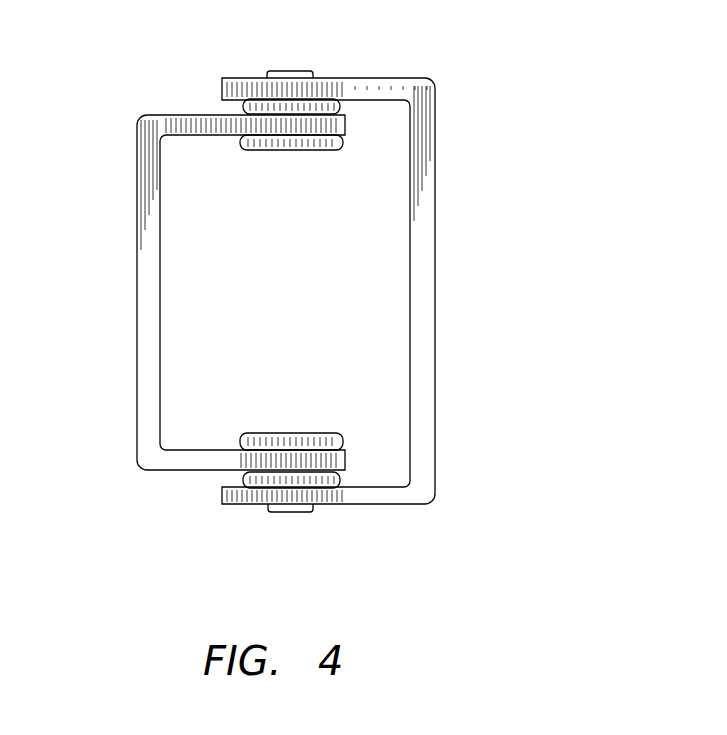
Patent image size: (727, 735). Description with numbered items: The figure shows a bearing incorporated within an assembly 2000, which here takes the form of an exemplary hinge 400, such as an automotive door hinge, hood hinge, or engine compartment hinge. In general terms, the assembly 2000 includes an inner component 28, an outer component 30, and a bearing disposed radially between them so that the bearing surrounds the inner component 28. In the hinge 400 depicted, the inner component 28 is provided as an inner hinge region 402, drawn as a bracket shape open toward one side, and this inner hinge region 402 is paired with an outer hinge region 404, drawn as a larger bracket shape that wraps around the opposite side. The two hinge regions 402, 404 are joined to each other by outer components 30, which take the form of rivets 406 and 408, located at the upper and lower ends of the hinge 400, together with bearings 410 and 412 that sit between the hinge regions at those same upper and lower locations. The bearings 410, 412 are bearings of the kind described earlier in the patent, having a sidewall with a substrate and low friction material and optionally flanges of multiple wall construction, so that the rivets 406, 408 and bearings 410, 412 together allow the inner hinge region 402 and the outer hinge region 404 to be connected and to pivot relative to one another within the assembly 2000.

The assembly 2000 is at (454, 54).
The hinge 400 is at (456, 145).
The outer hinge region 404 is at (436, 268).
The rivet 406 is at (288, 72).
The inner component 28 is at (220, 523).
The rivet 408 is at (267, 509).
The bearing 410 is at (243, 107).
The bearing 412 is at (245, 478).
The outer component 30 is at (190, 292).
The inner hinge region 402 is at (135, 212).